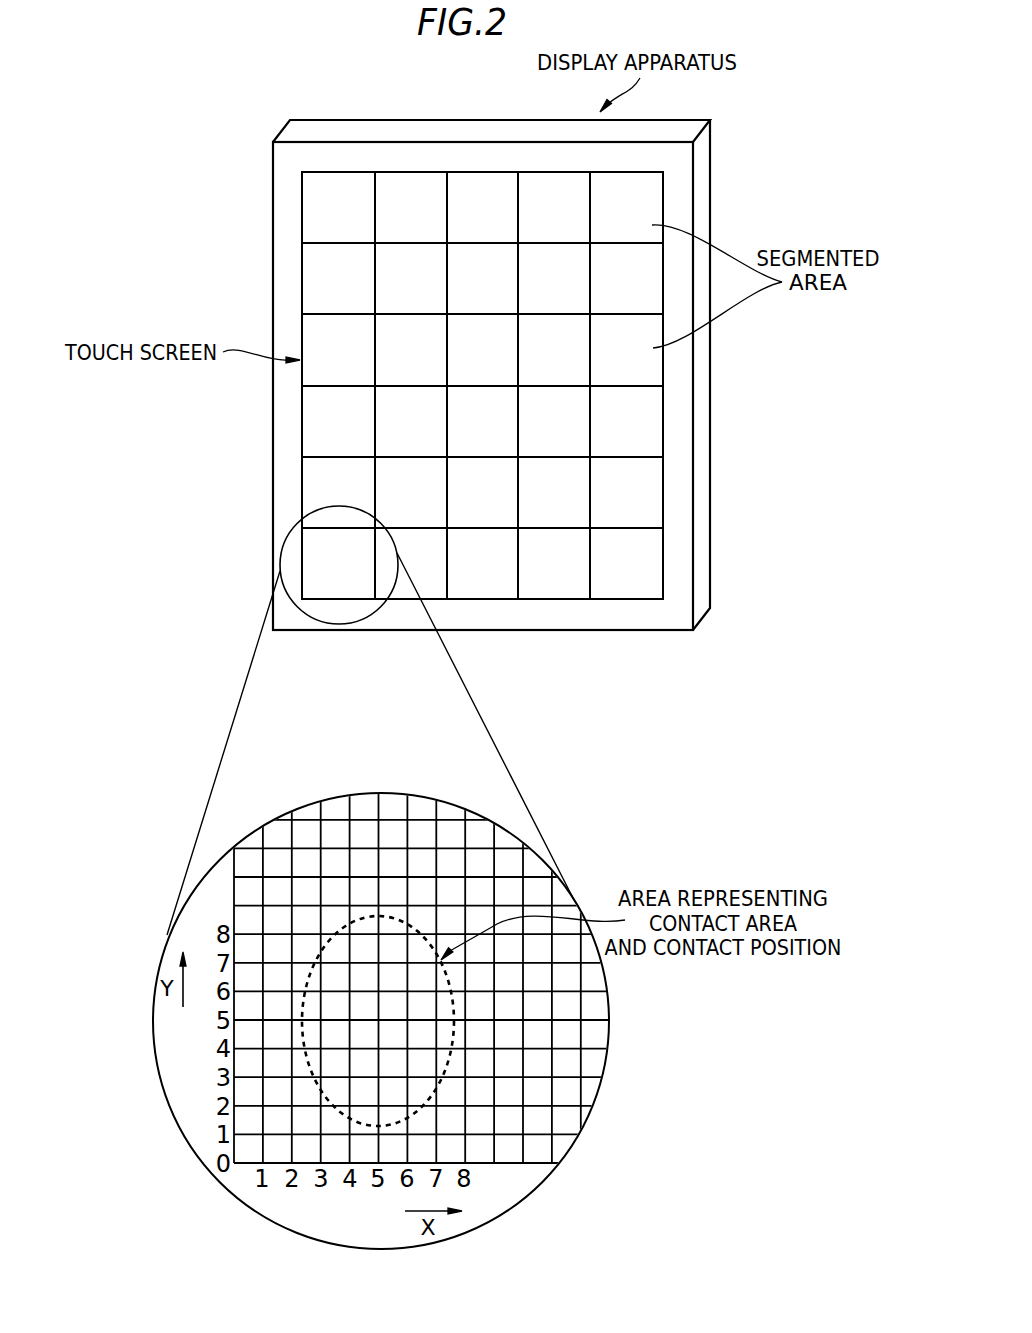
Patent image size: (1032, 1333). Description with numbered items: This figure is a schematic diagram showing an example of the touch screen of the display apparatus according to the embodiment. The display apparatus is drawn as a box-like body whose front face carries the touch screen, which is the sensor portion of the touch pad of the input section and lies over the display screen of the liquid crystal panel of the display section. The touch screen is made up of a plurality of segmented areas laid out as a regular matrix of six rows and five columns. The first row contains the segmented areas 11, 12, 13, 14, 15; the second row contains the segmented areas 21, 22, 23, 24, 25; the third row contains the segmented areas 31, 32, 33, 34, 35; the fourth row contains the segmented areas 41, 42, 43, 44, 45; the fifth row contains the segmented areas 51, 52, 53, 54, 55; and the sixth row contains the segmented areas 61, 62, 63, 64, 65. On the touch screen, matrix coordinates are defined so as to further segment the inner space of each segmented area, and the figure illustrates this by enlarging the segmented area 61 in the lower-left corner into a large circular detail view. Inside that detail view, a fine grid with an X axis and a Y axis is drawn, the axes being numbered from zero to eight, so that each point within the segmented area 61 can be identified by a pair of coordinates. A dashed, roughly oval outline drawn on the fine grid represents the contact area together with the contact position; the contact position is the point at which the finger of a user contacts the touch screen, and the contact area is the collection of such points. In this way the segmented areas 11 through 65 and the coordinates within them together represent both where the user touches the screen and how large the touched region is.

The segmented area 11 is at (338, 207).
The segmented area 12 is at (411, 207).
The segmented area 13 is at (482, 207).
The segmented area 14 is at (554, 207).
The segmented area 15 is at (626, 207).
The segmented area 21 is at (338, 278).
The segmented area 22 is at (411, 278).
The segmented area 23 is at (482, 278).
The segmented area 24 is at (554, 278).
The segmented area 25 is at (626, 278).
The segmented area 31 is at (338, 350).
The segmented area 32 is at (411, 350).
The segmented area 33 is at (482, 350).
The segmented area 34 is at (554, 350).
The segmented area 35 is at (626, 350).
The segmented area 41 is at (338, 421).
The segmented area 42 is at (411, 421).
The segmented area 43 is at (482, 421).
The segmented area 44 is at (554, 421).
The segmented area 45 is at (626, 421).
The segmented area 51 is at (338, 492).
The segmented area 52 is at (411, 492).
The segmented area 53 is at (482, 492).
The segmented area 54 is at (554, 492).
The segmented area 55 is at (626, 492).
The segmented area 61 is at (338, 563).
The segmented area 62 is at (411, 563).
The segmented area 63 is at (482, 563).
The segmented area 64 is at (554, 563).
The segmented area 65 is at (626, 563).